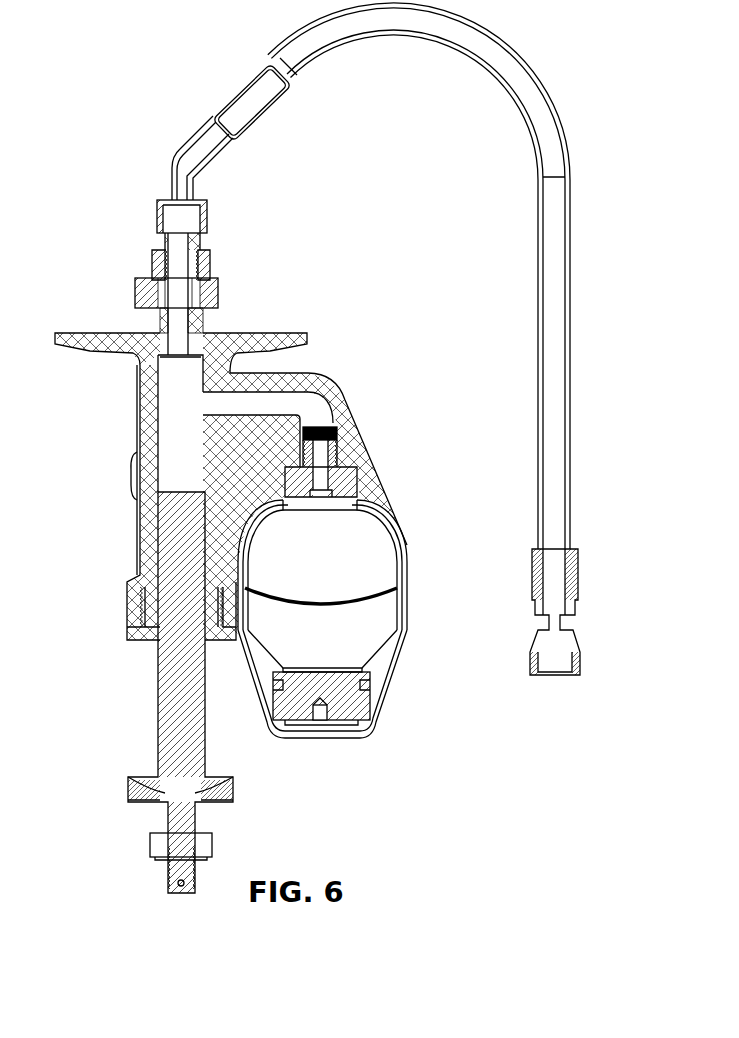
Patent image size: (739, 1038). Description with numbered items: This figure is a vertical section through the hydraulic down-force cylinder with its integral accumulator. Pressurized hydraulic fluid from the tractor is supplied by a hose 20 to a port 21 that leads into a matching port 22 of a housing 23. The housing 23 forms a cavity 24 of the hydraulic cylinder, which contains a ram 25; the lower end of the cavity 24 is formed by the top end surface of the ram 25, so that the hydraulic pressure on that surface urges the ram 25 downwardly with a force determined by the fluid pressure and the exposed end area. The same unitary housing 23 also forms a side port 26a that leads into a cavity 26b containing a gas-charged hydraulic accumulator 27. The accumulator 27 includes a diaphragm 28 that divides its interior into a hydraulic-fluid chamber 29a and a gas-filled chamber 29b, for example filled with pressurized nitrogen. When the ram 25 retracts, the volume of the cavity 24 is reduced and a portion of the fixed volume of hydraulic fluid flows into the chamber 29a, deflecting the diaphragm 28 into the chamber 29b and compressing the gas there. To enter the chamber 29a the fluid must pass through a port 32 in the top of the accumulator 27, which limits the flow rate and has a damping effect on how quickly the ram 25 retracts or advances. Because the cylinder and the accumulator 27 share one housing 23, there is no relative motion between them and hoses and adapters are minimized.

The hose 20 is at (500, 40).
The port 21 is at (166, 240).
The matching port 22 is at (167, 320).
The housing 23 is at (267, 373).
The cavity 24 is at (166, 410).
The ram 25 is at (155, 528).
The side port 26a is at (292, 403).
The cavity 26b is at (387, 537).
The gas-charged hydraulic accumulator 27 is at (358, 497).
The diaphragm 28 is at (367, 602).
The hydraulic-fluid chamber 29a is at (345, 576).
The gas-filled chamber 29b is at (345, 646).
The port 32 is at (322, 447).